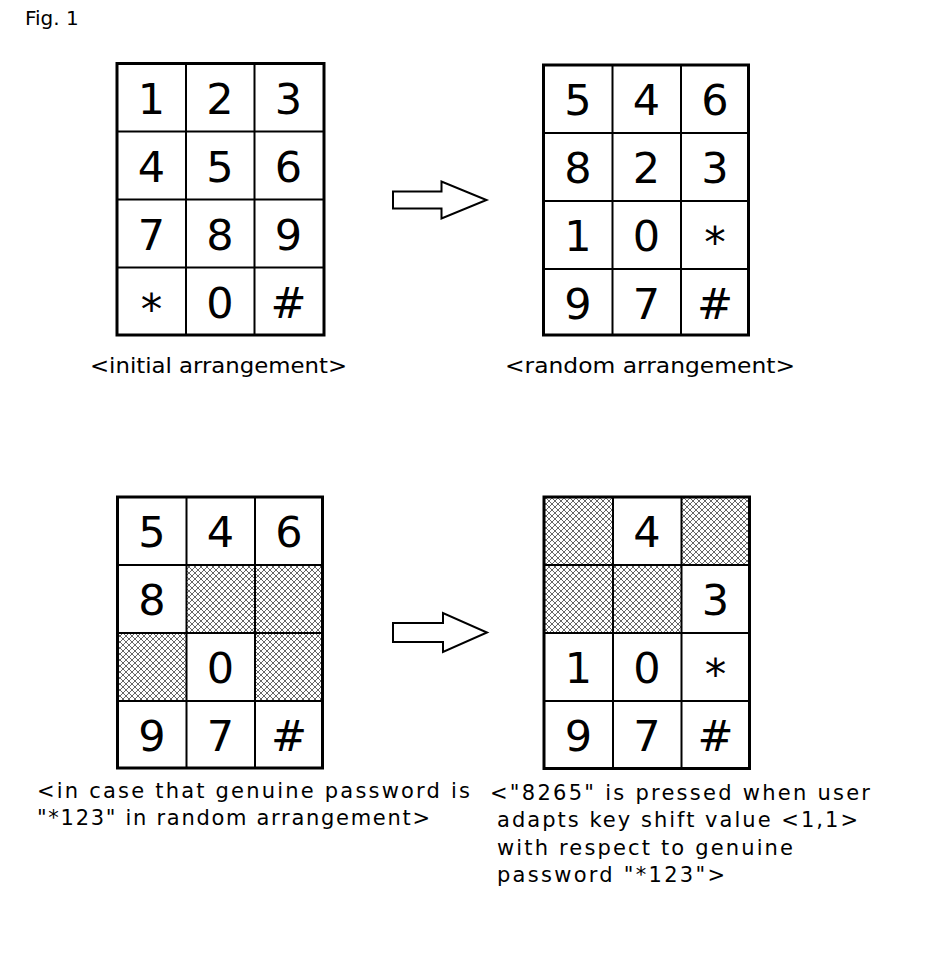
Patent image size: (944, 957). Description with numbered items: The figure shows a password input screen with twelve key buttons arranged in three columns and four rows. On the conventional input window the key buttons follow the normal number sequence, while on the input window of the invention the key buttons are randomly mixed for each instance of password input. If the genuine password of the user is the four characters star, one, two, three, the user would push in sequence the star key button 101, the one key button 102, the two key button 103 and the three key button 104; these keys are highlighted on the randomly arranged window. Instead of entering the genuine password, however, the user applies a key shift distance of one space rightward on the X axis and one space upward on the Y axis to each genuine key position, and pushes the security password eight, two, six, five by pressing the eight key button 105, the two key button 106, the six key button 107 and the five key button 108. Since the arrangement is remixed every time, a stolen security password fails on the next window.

The key button of "*" 101 is at (323, 668).
The key button of "1" 102 is at (120, 666).
The key button of "2" 103 is at (242, 568).
The key button of "3" 104 is at (323, 598).
The key button of "8" 105 is at (545, 600).
The key button of "2" 106 is at (668, 568).
The key button of "6" 107 is at (715, 500).
The key button of "5" 108 is at (582, 500).